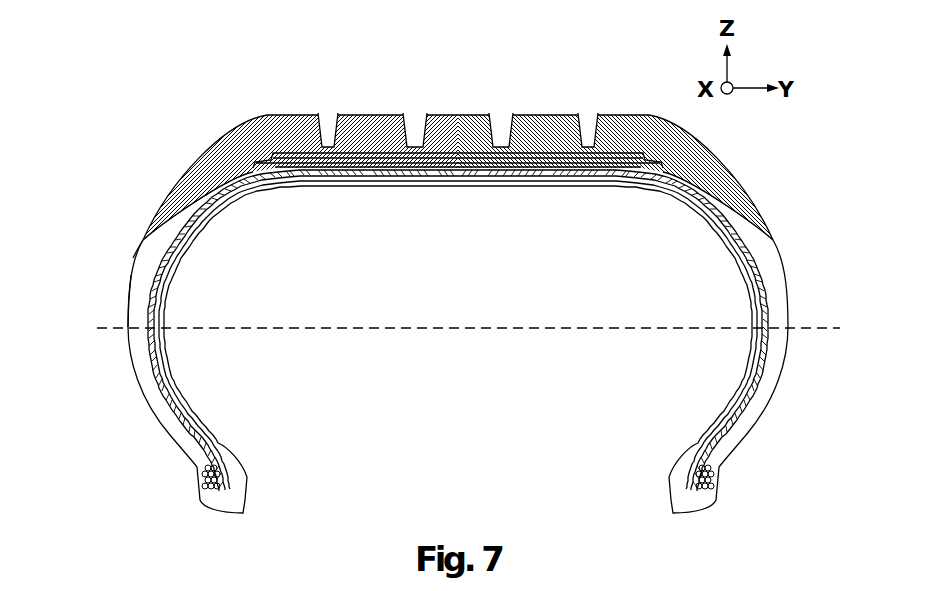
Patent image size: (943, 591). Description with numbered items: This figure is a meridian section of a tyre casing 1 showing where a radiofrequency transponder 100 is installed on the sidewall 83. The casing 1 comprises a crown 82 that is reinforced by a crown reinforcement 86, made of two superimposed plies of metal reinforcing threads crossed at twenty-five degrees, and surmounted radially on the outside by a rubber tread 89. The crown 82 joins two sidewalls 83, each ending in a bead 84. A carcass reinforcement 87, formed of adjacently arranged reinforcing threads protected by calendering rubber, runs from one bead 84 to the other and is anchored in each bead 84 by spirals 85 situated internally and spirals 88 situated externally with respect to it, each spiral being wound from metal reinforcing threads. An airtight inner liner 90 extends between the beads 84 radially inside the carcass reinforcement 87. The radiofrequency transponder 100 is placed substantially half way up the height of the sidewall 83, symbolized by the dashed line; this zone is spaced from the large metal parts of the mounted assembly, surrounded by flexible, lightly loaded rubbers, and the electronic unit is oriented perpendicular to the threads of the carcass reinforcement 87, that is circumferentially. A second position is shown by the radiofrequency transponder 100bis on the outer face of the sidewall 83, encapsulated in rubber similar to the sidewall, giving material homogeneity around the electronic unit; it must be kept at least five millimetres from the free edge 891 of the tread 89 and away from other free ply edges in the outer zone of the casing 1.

The tyre casing 1 is at (306, 76).
The crown 82 is at (519, 78).
The sidewall 83 is at (822, 281).
The bead 84 is at (180, 474).
The spirals 85 is at (232, 450).
The crown reinforcement 86 is at (528, 165).
The carcass reinforcement 87 is at (177, 185).
The spirals 88 is at (212, 482).
The tread 89 is at (447, 115).
The free edge of the tread 891 is at (140, 247).
The inner liner 90 is at (160, 293).
The radiofrequency transponder 100 is at (143, 365).
The radiofrequency transponder 100bis is at (125, 288).